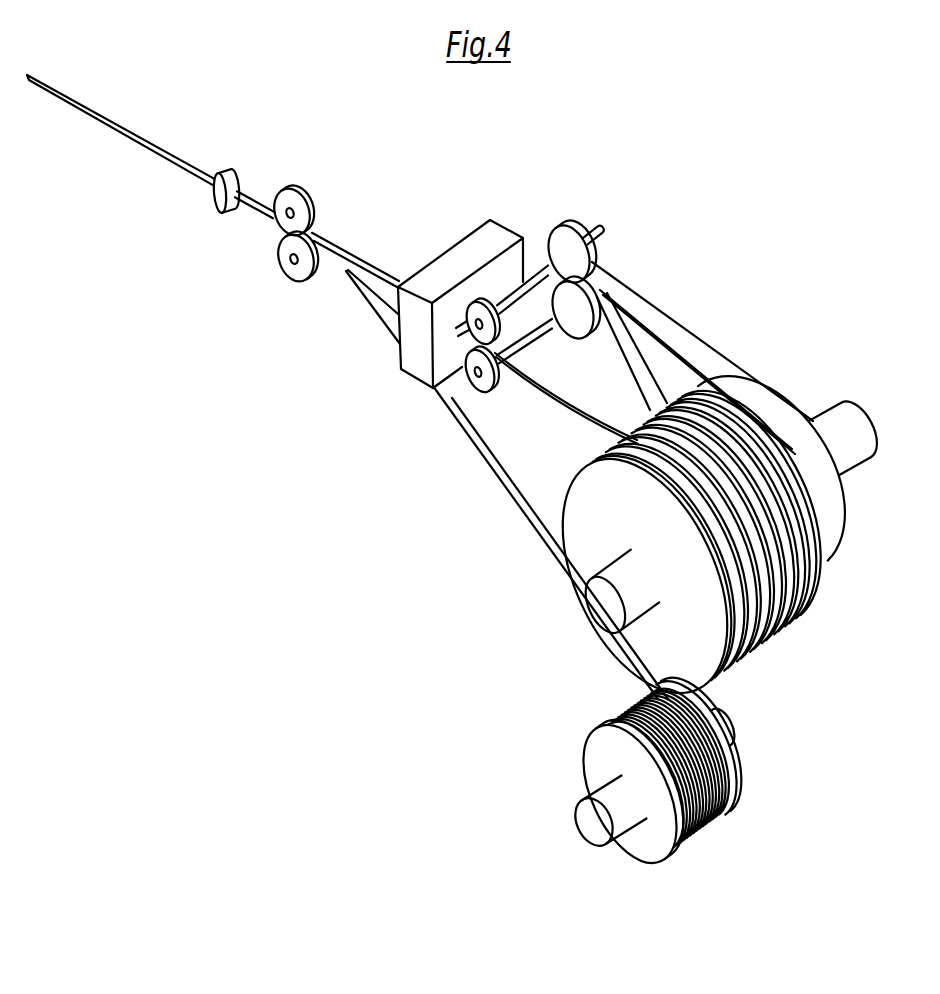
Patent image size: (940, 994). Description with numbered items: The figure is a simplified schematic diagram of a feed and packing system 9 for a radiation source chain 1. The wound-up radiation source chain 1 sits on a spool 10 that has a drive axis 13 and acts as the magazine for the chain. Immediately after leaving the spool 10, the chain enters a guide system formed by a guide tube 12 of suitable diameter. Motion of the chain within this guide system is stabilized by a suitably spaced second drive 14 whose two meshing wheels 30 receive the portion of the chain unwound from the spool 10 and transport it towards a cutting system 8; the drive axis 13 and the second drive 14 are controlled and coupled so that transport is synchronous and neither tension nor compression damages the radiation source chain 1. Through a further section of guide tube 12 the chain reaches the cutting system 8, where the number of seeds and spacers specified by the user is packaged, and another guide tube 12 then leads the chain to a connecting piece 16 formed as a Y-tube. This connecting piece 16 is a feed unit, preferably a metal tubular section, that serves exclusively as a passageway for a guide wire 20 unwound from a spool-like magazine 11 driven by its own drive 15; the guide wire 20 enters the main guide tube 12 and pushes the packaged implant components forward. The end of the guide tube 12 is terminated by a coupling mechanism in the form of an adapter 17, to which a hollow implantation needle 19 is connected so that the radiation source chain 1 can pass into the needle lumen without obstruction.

The radiation source chain 1 is at (688, 571).
The cutting system 8 is at (484, 230).
The feed and packing system 9 is at (382, 442).
The spool 10 is at (700, 644).
The spool-like magazine 11 is at (642, 797).
The guide tube 12 is at (383, 277).
The drive axis 13 is at (858, 428).
The second drive 14 is at (552, 343).
The drive 15 is at (597, 828).
The connecting piece 16 is at (350, 272).
The adapter 17 is at (233, 172).
The hollow implantation needle 19 is at (134, 140).
The guide wire 20 is at (695, 826).
The meshing wheels 30 is at (463, 418).